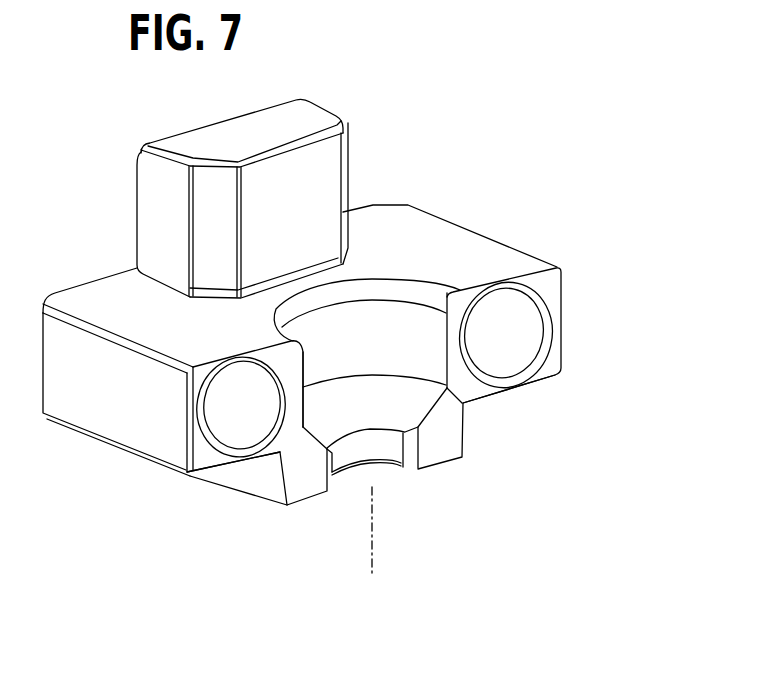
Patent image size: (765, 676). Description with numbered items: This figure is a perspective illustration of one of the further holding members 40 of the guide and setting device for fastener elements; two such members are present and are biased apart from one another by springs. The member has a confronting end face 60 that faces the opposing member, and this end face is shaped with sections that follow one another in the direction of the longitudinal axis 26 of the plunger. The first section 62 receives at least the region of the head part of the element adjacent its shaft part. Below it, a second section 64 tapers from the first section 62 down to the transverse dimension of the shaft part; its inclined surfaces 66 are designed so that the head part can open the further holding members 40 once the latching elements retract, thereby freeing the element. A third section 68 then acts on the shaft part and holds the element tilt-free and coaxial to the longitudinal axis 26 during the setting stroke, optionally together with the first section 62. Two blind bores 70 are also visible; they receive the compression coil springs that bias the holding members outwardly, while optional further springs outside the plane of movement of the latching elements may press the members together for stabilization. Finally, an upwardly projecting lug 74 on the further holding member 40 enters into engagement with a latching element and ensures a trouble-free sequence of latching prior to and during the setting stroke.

The longitudinal axis 26 is at (380, 556).
The further holding member 40 is at (473, 248).
The confronting end face 60 is at (553, 291).
The first section 62 is at (378, 327).
The second section 64 is at (413, 399).
The inclined surface 66 is at (378, 416).
The third section 68 is at (378, 447).
The blind bore 70 is at (500, 360).
The upwardly projecting lug 74 is at (302, 117).